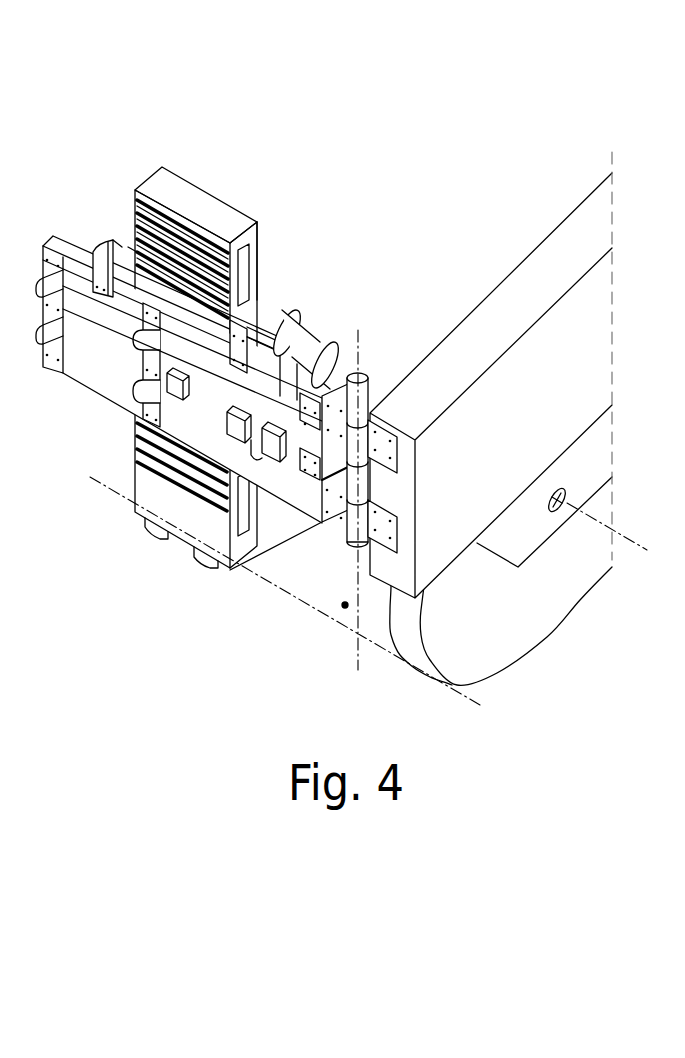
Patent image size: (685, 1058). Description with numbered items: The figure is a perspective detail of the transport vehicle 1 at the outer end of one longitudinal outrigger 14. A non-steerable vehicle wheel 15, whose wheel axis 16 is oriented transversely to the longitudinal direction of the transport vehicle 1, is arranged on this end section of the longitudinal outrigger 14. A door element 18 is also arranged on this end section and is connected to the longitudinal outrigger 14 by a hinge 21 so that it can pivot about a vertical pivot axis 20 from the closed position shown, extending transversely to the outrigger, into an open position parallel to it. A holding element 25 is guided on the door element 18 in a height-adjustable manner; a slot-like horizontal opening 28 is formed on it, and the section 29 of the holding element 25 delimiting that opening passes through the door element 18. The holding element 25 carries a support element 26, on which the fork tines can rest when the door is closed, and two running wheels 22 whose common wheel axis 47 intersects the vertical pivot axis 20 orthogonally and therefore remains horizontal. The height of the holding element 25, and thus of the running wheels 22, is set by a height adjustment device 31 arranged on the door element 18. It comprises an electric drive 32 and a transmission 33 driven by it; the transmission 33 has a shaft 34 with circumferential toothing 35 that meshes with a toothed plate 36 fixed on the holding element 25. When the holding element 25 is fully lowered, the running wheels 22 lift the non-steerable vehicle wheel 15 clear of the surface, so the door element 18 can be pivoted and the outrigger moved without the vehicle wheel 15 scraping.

The transport vehicle 1 is at (372, 115).
The longitudinal outrigger 14 is at (482, 325).
The non-steerable vehicle wheel 15 is at (522, 632).
The wheel axis 16 is at (635, 545).
The door element 18 is at (98, 367).
The vertical pivot axis 20 is at (348, 640).
The hinge 21 is at (378, 412).
The running wheel 22 is at (150, 540).
The holding element 25 is at (190, 200).
The support element 26 is at (257, 510).
The horizontal opening 28 is at (252, 258).
The section of the holding element 29 is at (243, 278).
The height adjustment device 31 is at (220, 372).
The electric drive 32 is at (303, 323).
The transmission 33 is at (122, 247).
The shaft 34 is at (257, 340).
The circumferential toothing 35 is at (131, 246).
The toothed plate 36 is at (196, 255).
The wheel axis 47 is at (380, 667).